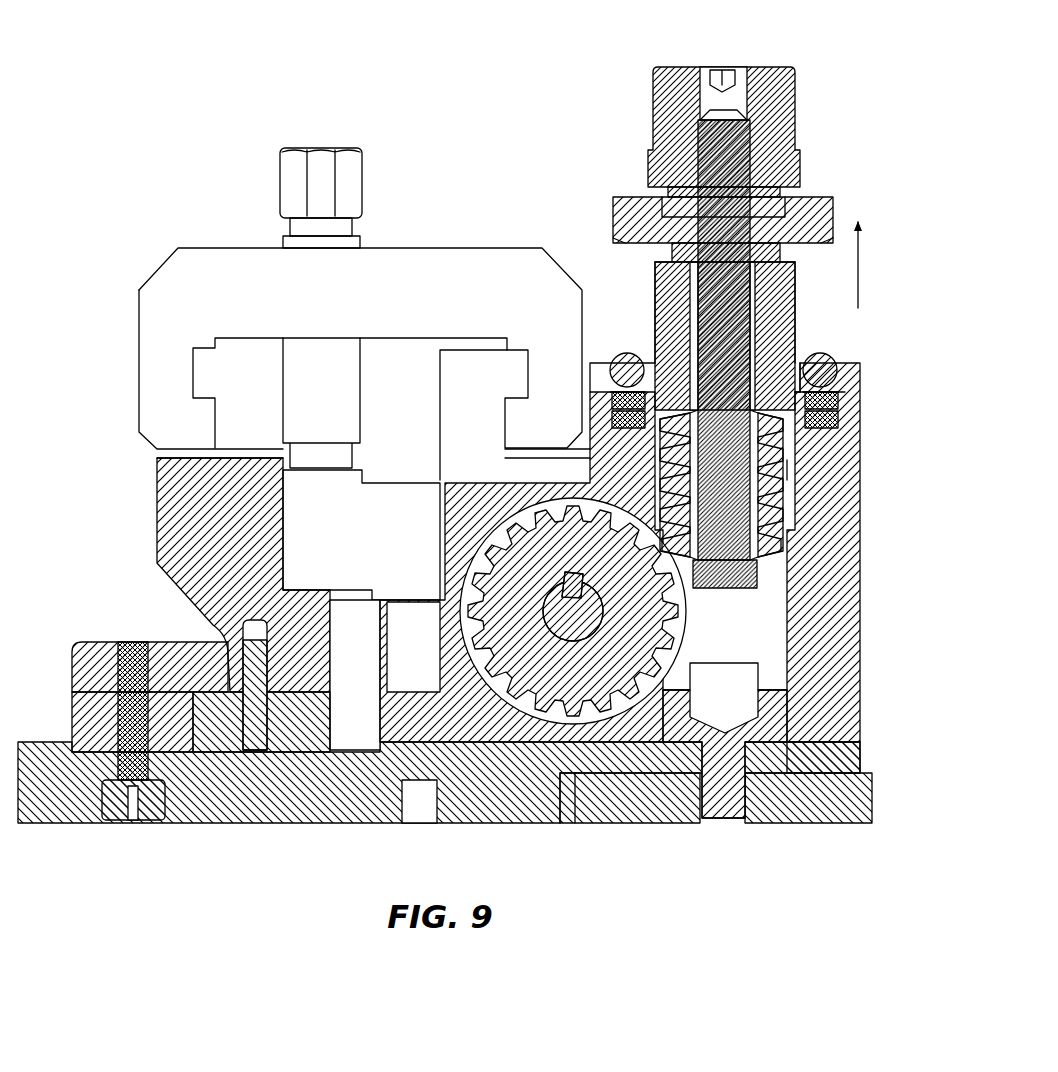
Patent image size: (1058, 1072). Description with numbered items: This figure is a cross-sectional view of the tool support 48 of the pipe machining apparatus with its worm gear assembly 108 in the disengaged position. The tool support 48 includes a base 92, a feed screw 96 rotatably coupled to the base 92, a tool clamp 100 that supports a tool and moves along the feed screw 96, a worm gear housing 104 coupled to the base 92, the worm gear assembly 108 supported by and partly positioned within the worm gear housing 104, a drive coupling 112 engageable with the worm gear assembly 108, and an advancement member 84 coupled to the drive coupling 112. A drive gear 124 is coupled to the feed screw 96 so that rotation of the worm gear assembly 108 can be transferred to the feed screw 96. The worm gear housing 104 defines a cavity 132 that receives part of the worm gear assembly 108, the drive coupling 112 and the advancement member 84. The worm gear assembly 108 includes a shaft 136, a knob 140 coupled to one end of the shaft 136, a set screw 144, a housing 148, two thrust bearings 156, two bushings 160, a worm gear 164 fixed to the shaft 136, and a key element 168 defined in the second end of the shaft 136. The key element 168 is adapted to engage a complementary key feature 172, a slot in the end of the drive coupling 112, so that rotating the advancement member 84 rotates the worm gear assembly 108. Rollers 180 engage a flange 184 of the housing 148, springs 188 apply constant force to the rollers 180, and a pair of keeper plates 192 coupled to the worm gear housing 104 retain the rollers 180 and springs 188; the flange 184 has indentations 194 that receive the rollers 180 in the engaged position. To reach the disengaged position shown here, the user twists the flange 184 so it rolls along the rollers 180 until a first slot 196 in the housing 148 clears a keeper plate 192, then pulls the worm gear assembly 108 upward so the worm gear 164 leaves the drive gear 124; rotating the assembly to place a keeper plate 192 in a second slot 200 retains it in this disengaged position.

The tool support 48 is at (90, 258).
The advancement member 84 is at (805, 805).
The base 92 is at (205, 805).
The feed screw 96 is at (558, 617).
The tool clamp 100 is at (313, 370).
The worm gear housing 104 is at (848, 708).
The worm gear assembly 108 is at (583, 240).
The drive coupling 112 is at (765, 702).
The drive gear 124 is at (594, 745).
The cavity 132 is at (780, 575).
The shaft 136 is at (727, 292).
The knob 140 is at (785, 80).
The set screw 144 is at (727, 68).
The housing 148 is at (647, 307).
The thrust bearings 156 is at (773, 232).
The bushings 160 is at (592, 267).
The worm gear 164 is at (783, 497).
The key element 168 is at (680, 565).
The key feature 172 is at (760, 665).
The rollers 180 is at (630, 355).
The flange 184 is at (808, 197).
The springs 188 is at (612, 418).
The keeper plates 192 is at (612, 392).
The indentations 194 is at (612, 243).
The first slot 196 is at (630, 272).
The second slot 200 is at (792, 362).